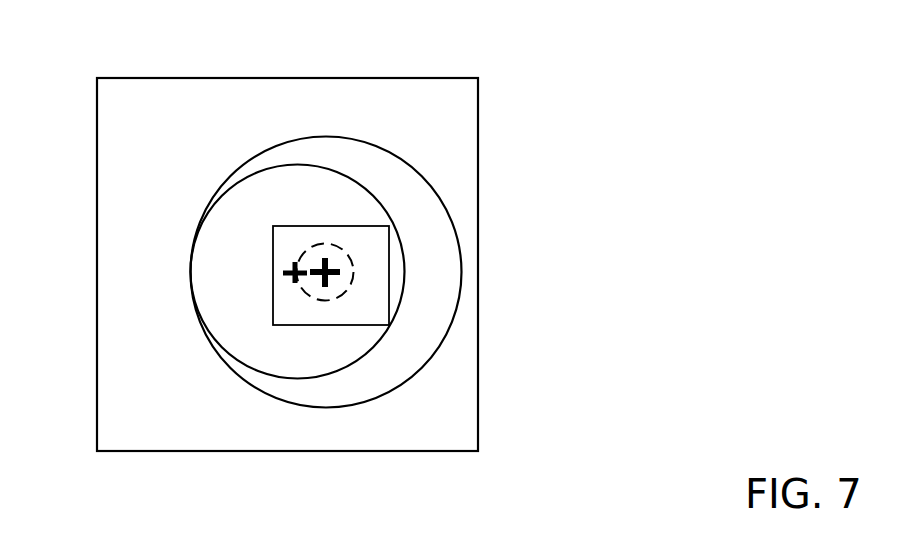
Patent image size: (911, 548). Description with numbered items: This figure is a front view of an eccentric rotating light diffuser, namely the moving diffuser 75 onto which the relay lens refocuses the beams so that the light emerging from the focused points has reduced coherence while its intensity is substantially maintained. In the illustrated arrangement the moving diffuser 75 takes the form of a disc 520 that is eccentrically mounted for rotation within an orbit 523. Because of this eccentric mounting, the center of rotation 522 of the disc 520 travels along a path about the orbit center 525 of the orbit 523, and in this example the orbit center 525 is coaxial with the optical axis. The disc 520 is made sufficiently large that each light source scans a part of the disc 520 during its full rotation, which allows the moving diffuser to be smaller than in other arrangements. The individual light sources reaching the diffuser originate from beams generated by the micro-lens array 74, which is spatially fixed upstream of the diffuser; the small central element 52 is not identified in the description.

The moving light diffuser 75 is at (628, 98).
The light emitting element 52 is at (322, 243).
The disc 520 is at (232, 230).
The orbit 523 is at (397, 200).
The center of rotation 522 is at (290, 275).
The orbit center 525 is at (330, 278).
The micro-lens array 74 is at (390, 268).